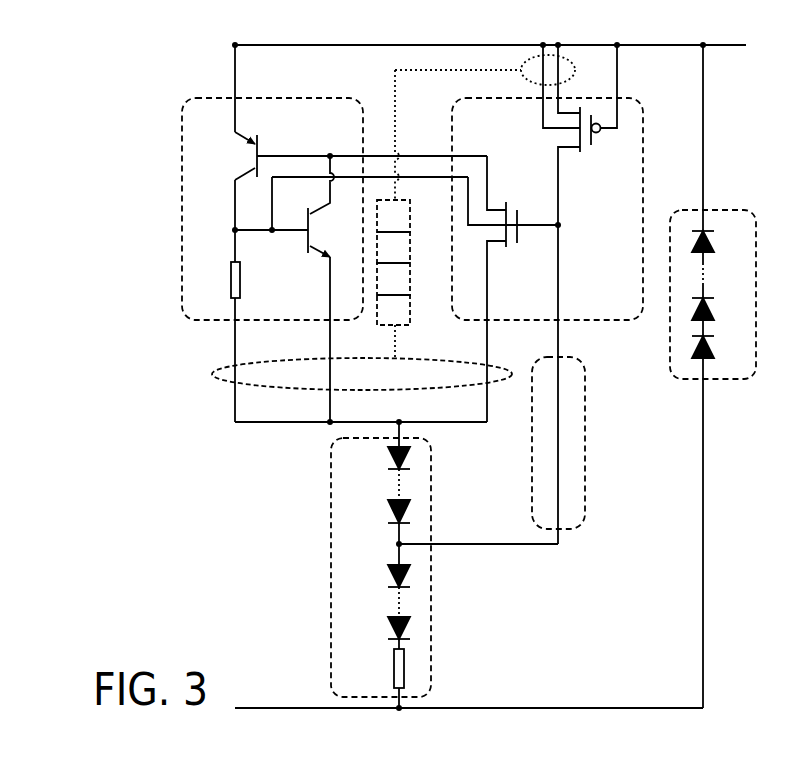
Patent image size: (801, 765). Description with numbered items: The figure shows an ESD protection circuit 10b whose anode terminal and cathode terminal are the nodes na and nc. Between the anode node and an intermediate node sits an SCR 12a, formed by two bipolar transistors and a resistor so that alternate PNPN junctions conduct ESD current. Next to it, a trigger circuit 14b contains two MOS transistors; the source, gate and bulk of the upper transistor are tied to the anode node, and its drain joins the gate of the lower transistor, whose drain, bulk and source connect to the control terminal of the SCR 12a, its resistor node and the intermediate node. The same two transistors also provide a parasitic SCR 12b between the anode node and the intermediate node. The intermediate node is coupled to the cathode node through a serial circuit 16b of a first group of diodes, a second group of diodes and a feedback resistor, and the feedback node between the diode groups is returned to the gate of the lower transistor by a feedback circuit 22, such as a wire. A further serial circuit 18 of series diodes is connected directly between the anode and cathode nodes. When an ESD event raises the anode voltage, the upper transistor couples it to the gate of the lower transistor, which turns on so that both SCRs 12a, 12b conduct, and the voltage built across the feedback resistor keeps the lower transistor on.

The ESD protection circuit 10b is at (140, 89).
The SCR 12a is at (182, 160).
The parasitic SCR 12b is at (396, 330).
The trigger circuit 14b is at (590, 322).
The serial circuit 16b is at (331, 469).
The serial circuit 18 is at (722, 381).
The feedback circuit 22 is at (585, 462).